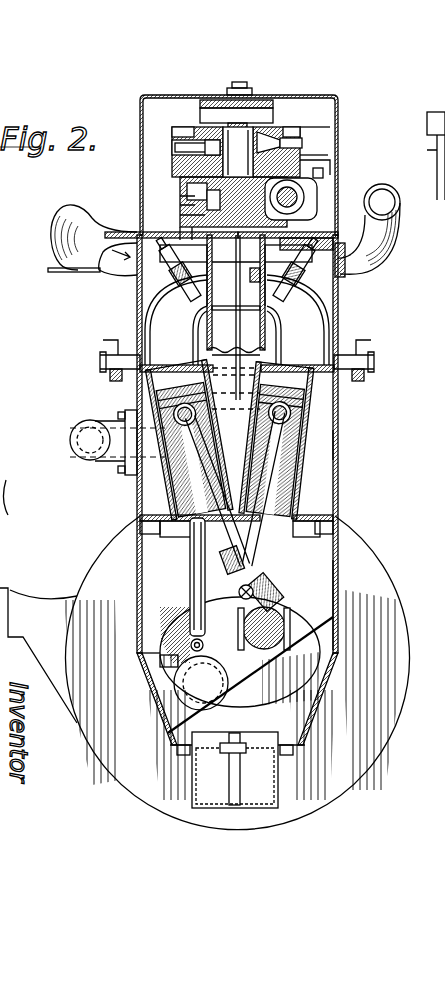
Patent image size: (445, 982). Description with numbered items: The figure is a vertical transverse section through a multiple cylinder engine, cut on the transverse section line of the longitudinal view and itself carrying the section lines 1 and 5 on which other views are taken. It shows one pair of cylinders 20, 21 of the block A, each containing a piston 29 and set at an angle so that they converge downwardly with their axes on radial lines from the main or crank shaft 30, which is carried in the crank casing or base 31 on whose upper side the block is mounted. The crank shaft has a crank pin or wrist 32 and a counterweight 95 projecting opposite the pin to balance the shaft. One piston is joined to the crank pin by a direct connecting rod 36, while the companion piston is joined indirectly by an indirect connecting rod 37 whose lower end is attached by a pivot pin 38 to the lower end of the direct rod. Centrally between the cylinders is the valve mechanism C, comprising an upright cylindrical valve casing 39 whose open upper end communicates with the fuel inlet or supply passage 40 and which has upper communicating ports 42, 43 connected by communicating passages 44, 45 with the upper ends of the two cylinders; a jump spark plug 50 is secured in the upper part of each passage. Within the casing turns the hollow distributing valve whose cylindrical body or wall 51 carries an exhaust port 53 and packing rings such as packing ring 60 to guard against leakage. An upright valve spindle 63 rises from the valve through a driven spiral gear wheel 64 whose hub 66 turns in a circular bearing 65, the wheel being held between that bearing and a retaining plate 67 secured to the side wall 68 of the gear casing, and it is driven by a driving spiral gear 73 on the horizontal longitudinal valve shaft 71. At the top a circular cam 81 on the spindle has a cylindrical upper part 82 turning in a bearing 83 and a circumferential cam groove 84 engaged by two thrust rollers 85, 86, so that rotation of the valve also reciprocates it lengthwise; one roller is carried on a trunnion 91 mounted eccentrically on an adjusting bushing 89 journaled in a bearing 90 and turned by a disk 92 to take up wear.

The section line 1— 1 is at (309, 180).
The section line 5— 5 is at (240, 150).
The cylinder 20 is at (302, 492).
The cylinder 21 is at (177, 493).
The piston 29 is at (152, 404).
The main or crank shaft 30 is at (190, 712).
The crank casing or base 31 is at (338, 608).
The crank pin or wrist 32 is at (313, 663).
The direct connecting rod 36 is at (222, 551).
The indirect connecting rod 37 is at (222, 550).
The pivot pin 38 is at (240, 592).
The upright cylindrical valve casing 39 is at (232, 325).
The fuel inlet or supply passage 40 is at (168, 242).
The upper communicating port 42 is at (265, 297).
The upper communicating port 43 is at (207, 290).
The communicating passage 44 is at (297, 323).
The communicating passage 45 is at (176, 323).
The jump spark plug 50 is at (128, 272).
The cylindrical body or wall of distributing valve 51 is at (236, 370).
The exhaust port of distributing valve 53 is at (252, 275).
The packing ring 60 is at (236, 308).
The upright valve shaft or spindle 63 is at (193, 193).
The driven spiral gear wheel 64 is at (207, 203).
The circular bearing 65 is at (206, 206).
The hub of spiral gear wheel 66 is at (305, 202).
The retaining plate 67 is at (200, 192).
The side wall of gear casing 68 is at (196, 179).
The horizontal longitudinal valve shaft 71 is at (315, 188).
The driving spiral gear 73 is at (302, 175).
The circular cam 81 is at (286, 134).
The cylindrical upper part of cam 82 is at (236, 111).
The bearing 83 is at (205, 118).
The circumferential cam groove 84 is at (254, 137).
The thrust roller 85 is at (205, 126).
The thrust roller 86 is at (300, 126).
The adjusting bushing 89 is at (176, 148).
The bearing 90 is at (192, 166).
The trunnion 91 is at (150, 158).
The disk 92 is at (295, 160).
The counterweight 95 is at (160, 633).
The block of cylinders A is at (348, 448).
The valve mechanism C is at (236, 292).